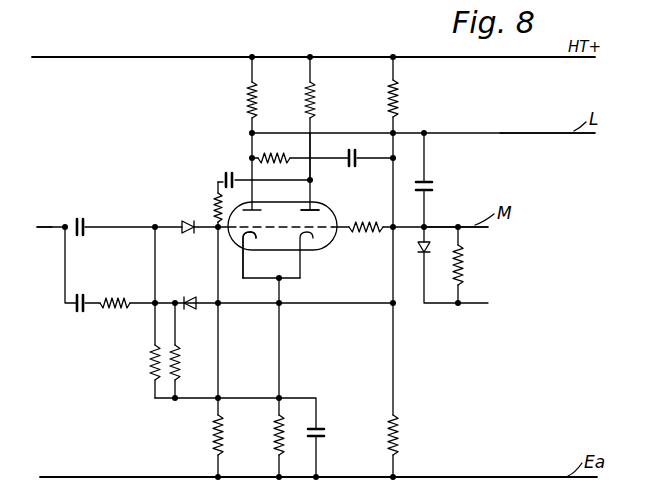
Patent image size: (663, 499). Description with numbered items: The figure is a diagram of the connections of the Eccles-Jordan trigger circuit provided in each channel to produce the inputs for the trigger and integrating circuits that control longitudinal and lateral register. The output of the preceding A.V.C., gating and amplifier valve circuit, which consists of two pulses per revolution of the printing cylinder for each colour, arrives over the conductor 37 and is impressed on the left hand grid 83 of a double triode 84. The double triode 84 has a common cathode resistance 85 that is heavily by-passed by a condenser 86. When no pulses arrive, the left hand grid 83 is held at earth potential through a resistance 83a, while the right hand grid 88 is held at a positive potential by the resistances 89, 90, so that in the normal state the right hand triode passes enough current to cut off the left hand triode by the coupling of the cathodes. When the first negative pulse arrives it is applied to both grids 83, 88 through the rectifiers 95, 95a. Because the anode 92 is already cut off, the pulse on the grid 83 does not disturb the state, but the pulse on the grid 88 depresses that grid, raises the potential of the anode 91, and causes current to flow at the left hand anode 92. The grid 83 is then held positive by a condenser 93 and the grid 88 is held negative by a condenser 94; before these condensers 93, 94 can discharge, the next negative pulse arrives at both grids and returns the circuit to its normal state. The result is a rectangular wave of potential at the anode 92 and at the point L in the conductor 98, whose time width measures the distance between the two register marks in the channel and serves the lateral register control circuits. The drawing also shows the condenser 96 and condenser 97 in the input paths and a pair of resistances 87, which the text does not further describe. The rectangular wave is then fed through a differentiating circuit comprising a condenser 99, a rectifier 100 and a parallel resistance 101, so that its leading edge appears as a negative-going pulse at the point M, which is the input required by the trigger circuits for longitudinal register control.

The conductor 37 is at (47, 230).
The left hand grid 83 is at (244, 231).
The resistance 83a is at (213, 440).
The double triode 84 is at (320, 213).
The common cathode resistance 85 is at (274, 438).
The condenser 86 is at (325, 432).
The resistors 87 is at (150, 365).
The right hand grid 88 is at (337, 223).
The resistance 89 is at (400, 102).
The resistance 90 is at (405, 433).
The anode 91 is at (326, 203).
The anode 92 is at (254, 207).
The condenser 93 is at (224, 179).
The condenser 94 is at (353, 148).
The rectifier 95 is at (189, 221).
The rectifier 95a is at (197, 309).
The coupling capacitor 96 is at (91, 215).
The capacitor 97 is at (80, 312).
The conductor 98 is at (528, 134).
The condenser 99 is at (432, 182).
The rectifier 100 is at (420, 248).
The parallel resistance 101 is at (466, 268).